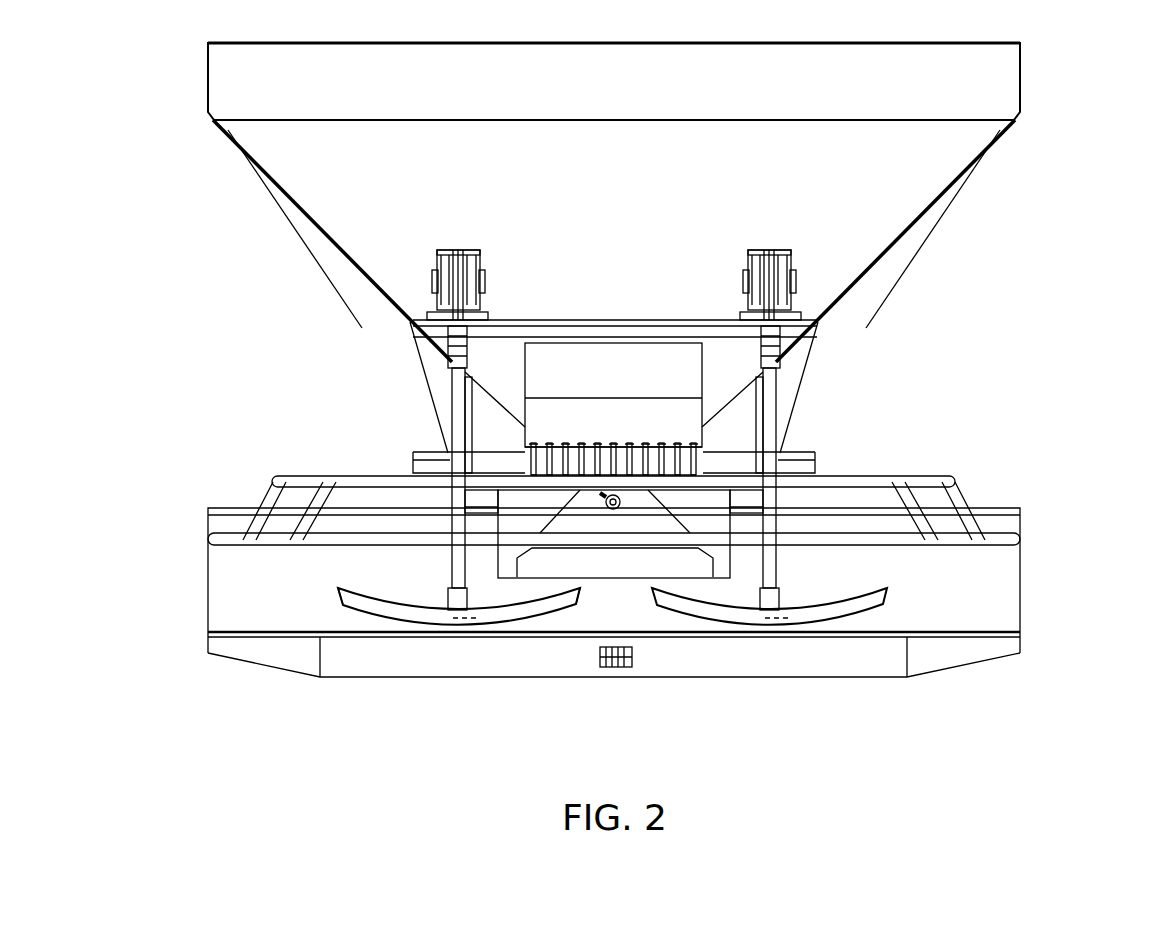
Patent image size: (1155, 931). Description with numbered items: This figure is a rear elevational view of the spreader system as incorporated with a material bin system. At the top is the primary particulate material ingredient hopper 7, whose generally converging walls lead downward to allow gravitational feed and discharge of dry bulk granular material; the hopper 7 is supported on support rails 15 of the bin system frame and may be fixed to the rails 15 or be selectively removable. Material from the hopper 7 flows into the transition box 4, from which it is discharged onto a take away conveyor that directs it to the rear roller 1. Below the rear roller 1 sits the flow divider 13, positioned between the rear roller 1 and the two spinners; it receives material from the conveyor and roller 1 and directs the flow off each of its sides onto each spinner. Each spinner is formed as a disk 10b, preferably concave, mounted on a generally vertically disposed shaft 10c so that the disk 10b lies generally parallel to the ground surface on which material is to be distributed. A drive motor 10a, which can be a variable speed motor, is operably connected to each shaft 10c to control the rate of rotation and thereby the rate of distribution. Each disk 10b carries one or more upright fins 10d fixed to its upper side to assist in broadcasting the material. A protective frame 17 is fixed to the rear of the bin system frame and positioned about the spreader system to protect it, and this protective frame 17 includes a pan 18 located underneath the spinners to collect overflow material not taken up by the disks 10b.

The hopper 7 is at (623, 186).
The transition box 4 is at (616, 377).
The rear roller 1 is at (700, 462).
The drive motor 10a is at (457, 252).
The disk 10b is at (425, 618).
The shaft 10c is at (457, 407).
The fin 10d is at (338, 595).
The flow divider 13 is at (552, 510).
The support rail 15 is at (397, 327).
The protective frame 17 is at (962, 503).
The pan 18 is at (967, 630).